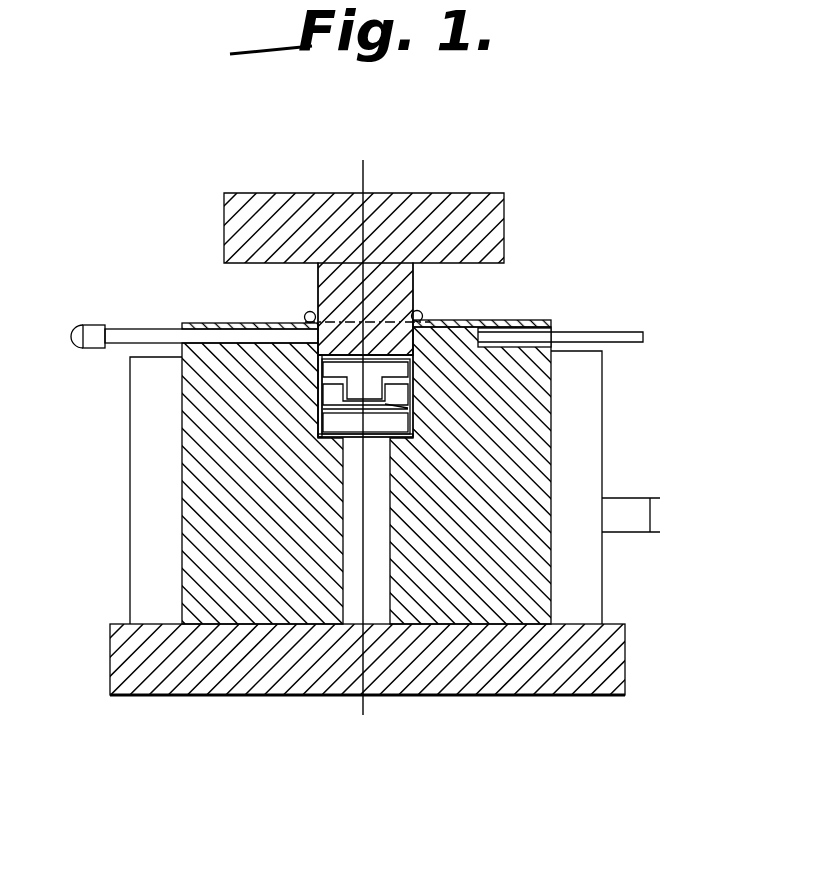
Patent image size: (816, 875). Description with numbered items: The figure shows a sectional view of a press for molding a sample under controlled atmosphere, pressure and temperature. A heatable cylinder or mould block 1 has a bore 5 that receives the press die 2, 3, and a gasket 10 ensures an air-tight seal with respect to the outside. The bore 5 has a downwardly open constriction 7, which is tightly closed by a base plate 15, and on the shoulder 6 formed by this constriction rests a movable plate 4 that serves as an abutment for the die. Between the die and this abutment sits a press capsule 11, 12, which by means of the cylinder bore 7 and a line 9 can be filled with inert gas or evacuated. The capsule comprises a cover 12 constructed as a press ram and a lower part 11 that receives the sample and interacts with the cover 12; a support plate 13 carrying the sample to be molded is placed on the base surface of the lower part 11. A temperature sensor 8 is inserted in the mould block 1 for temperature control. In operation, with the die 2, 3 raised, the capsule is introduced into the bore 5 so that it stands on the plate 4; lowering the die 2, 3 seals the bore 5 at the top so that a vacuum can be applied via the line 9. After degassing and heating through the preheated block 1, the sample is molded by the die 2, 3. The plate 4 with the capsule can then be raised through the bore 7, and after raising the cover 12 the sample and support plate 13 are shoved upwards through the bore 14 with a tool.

The mould block 1 is at (210, 540).
The press die 2 is at (427, 202).
The press die 3 is at (402, 340).
The movable plate 4 is at (408, 422).
The bore 5 is at (320, 392).
The shoulder 6 is at (362, 410).
The constriction 7 is at (393, 575).
The temperature sensor 8 is at (617, 337).
The line 9 is at (128, 337).
The gasket 10 is at (307, 313).
The lower part 11 is at (408, 392).
The cover 12 is at (408, 366).
The support plate 13 is at (408, 404).
The bore 14 is at (318, 442).
The base plate 15 is at (593, 668).